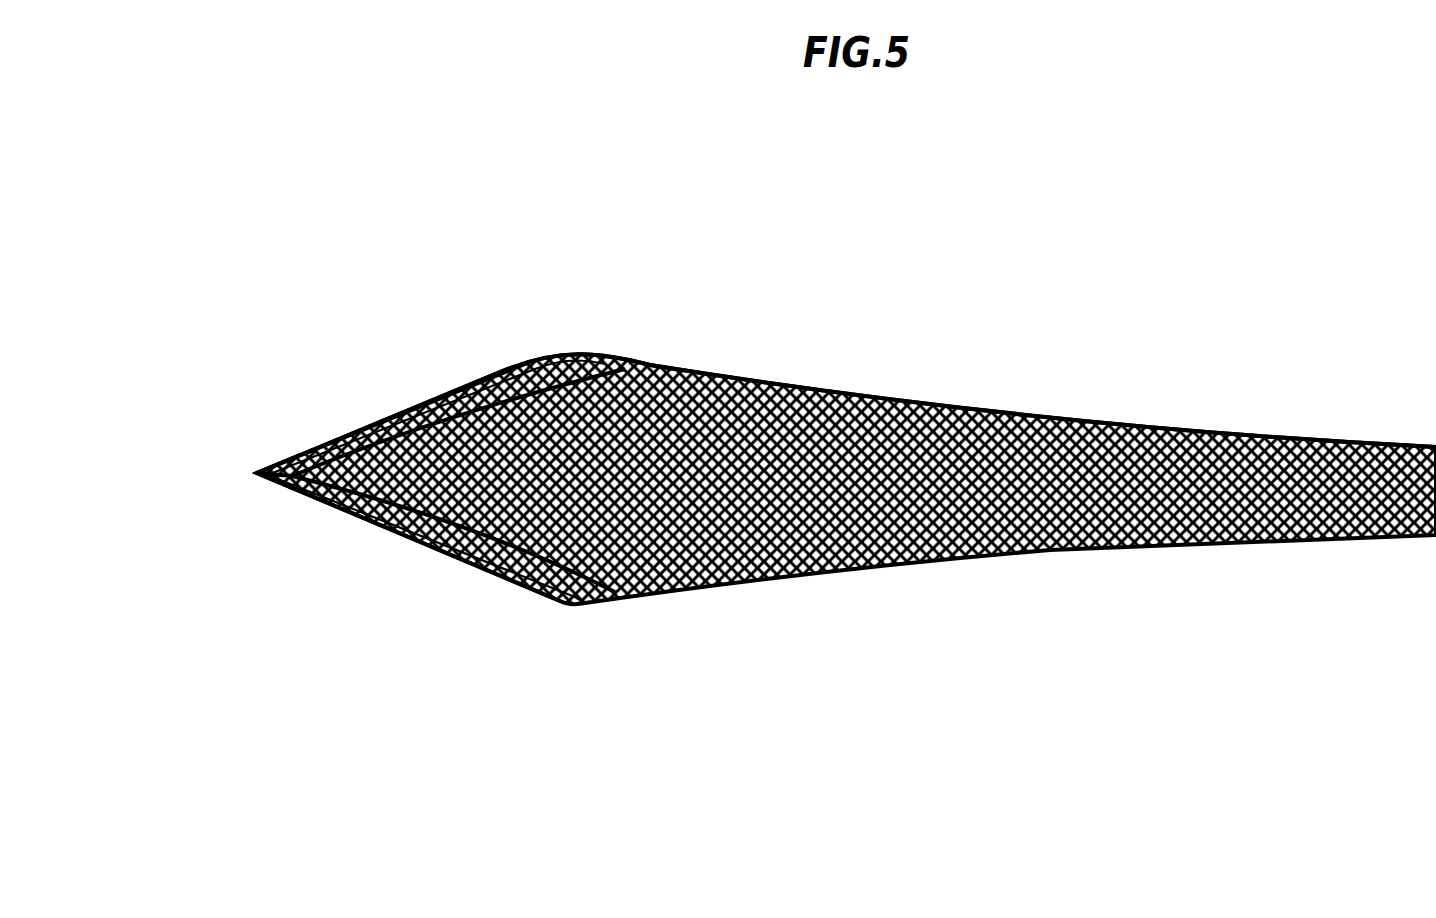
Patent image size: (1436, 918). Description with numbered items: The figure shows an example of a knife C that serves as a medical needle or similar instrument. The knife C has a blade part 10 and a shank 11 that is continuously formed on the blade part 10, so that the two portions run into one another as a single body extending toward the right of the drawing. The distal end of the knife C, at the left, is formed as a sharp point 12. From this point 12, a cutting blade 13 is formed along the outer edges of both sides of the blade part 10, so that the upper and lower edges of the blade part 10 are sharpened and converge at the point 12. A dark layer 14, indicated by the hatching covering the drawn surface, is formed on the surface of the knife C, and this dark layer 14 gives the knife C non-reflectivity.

The blade part 10 is at (607, 608).
The shank 11 is at (980, 412).
The point 12 is at (257, 473).
The cutting blade 13 is at (392, 412).
The dark layer 14 is at (742, 427).
The knife C is at (270, 515).